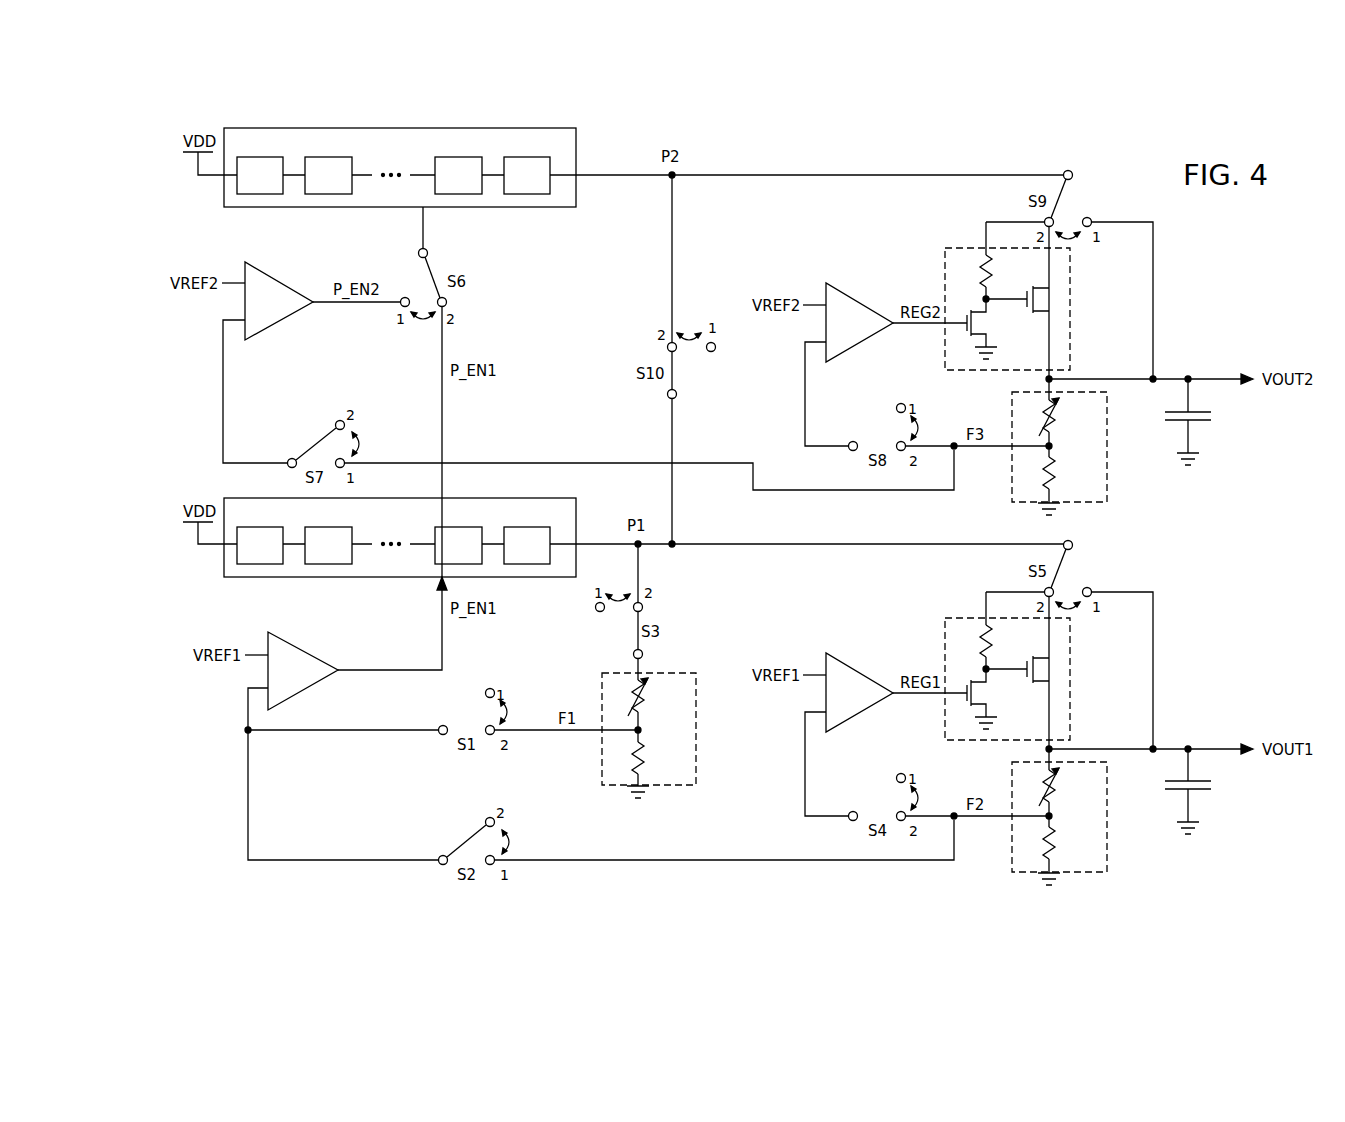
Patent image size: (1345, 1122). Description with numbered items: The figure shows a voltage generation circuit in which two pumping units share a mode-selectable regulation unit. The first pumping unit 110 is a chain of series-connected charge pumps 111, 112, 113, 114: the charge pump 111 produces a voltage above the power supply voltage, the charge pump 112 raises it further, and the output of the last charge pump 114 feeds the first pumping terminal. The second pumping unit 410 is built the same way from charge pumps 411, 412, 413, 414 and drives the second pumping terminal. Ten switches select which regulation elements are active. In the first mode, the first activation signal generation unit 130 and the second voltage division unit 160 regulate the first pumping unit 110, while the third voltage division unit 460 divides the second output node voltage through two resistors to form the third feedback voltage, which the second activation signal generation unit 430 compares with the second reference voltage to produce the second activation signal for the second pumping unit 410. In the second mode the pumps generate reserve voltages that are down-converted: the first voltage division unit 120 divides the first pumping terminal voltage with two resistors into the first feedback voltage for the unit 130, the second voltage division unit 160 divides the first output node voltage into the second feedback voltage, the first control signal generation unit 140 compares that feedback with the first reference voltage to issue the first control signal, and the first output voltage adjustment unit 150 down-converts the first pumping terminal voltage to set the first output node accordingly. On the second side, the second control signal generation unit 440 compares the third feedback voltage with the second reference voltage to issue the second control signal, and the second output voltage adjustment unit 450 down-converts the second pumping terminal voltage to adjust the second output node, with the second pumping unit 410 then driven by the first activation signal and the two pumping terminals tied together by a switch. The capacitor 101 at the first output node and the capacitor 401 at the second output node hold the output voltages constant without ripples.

The second pumping unit 410 is at (400, 158).
The charge pump 411 is at (253, 157).
The charge pump 412 is at (321, 157).
The charge pump 413 is at (451, 157).
The charge pump 414 is at (520, 157).
The second activation signal generation unit 430 is at (270, 275).
The second control signal generation unit 440 is at (851, 297).
The second output voltage adjustment unit 450 is at (962, 248).
The third voltage division unit 460 is at (1107, 408).
The capacitor 401 is at (1203, 416).
The first pumping unit 110 is at (400, 528).
The charge pump 111 is at (253, 527).
The charge pump 112 is at (321, 527).
The charge pump 113 is at (451, 527).
The charge pump 114 is at (520, 527).
The first voltage division unit 120 is at (658, 673).
The first activation signal generation unit 130 is at (293, 645).
The first control signal generation unit 140 is at (851, 667).
The first output voltage adjustment unit 150 is at (962, 618).
The second voltage division unit 160 is at (1107, 778).
The capacitor 101 is at (1203, 786).